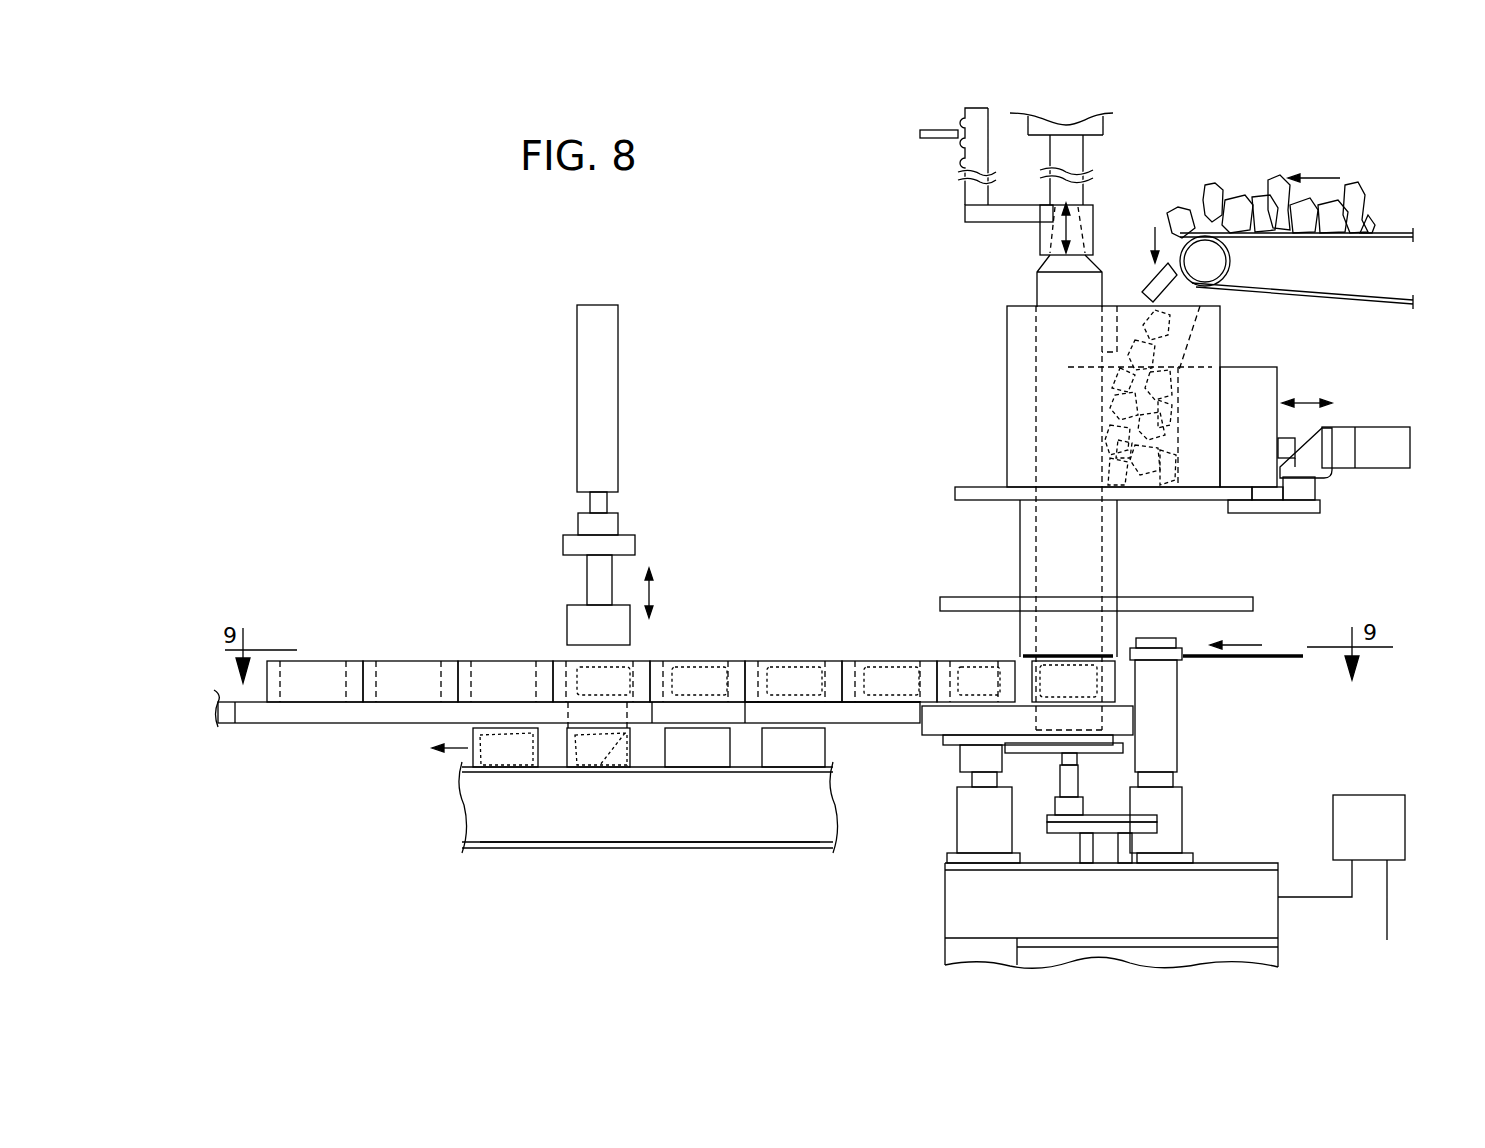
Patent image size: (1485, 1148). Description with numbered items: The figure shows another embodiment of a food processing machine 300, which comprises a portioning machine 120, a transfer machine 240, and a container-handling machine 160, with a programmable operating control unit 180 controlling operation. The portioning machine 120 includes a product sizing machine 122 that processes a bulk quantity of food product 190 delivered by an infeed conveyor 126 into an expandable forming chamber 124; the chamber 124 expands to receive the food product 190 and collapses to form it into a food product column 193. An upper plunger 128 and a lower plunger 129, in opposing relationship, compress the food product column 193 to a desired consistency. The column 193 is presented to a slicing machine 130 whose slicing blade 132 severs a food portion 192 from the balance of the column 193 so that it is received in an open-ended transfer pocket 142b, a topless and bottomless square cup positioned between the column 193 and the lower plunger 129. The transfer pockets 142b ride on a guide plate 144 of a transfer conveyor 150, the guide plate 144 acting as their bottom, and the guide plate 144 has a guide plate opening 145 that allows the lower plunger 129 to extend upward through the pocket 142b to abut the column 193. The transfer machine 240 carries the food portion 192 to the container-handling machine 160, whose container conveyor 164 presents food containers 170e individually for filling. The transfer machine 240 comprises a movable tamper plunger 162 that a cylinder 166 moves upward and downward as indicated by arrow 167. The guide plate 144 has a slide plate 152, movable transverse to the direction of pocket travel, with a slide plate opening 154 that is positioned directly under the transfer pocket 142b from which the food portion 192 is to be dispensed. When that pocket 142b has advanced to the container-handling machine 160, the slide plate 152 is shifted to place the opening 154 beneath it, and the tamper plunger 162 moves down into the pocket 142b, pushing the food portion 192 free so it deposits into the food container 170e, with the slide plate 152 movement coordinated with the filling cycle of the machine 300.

The food processing machine 300 is at (830, 186).
The food product 190 is at (1215, 183).
The infeed conveyor 126 is at (1383, 228).
The upper plunger 128 is at (1043, 285).
The portioning machine 120 is at (930, 324).
The product sizing machine 122 is at (953, 429).
The expandable forming chamber 124 is at (1189, 482).
The food product column 193 is at (1047, 542).
The transfer pocket 142b is at (840, 657).
The transfer machine 240 is at (372, 619).
The food portion 192 is at (628, 648).
The cylinder 166 is at (585, 442).
The tamper plunger 162 is at (593, 580).
The arrow 167 is at (653, 592).
The slicing blade 132 is at (1287, 653).
The slicing machine 130 is at (1295, 696).
The guide plate opening 145 is at (1100, 722).
The transfer conveyor 150 is at (972, 777).
The lower plunger 129 is at (1077, 782).
The programmable operating control unit 180 is at (1377, 793).
The container-handling machine 160 is at (410, 850).
The container conveyor 164 is at (550, 850).
The slide plate 152 is at (648, 720).
The slide plate opening 154 is at (627, 707).
The food container 170e is at (762, 753).
The guide plate 144 is at (853, 715).